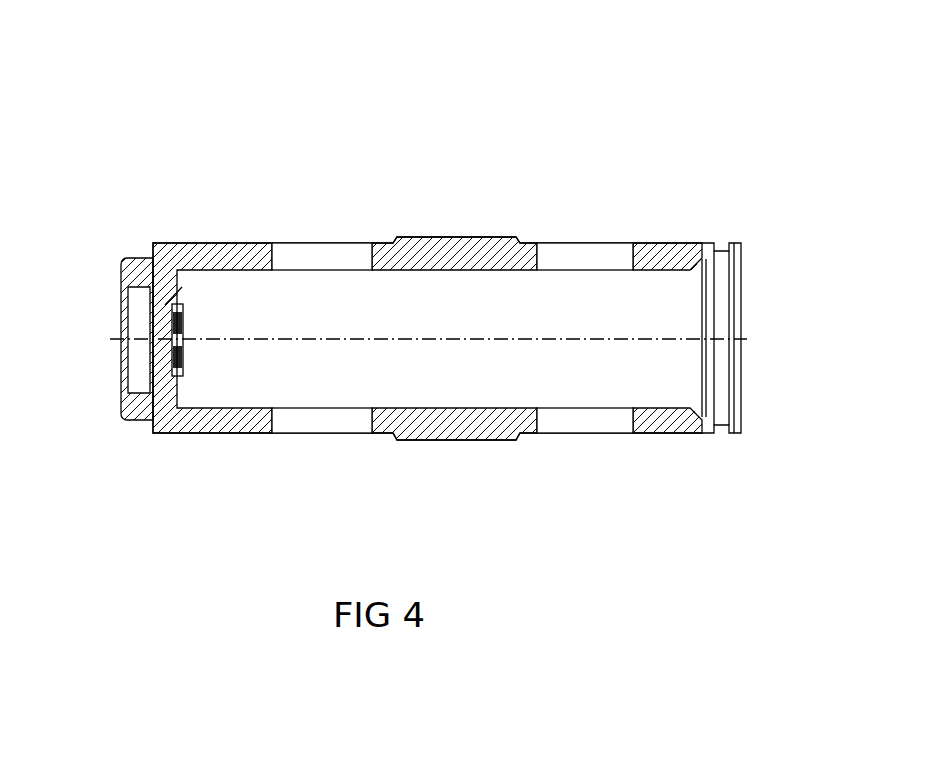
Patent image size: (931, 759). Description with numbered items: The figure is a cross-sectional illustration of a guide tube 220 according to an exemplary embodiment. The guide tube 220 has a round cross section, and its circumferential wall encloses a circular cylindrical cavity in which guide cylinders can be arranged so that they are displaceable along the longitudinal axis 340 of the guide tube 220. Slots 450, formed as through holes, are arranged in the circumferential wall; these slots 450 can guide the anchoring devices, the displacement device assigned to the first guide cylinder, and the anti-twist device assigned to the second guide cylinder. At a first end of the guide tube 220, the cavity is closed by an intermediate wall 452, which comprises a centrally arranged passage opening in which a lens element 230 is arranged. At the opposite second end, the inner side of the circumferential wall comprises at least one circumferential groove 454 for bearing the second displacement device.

The guide tube 220 is at (172, 160).
The lens element 230 is at (157, 360).
The longitudinal axis 340 is at (445, 342).
The slots 450 is at (313, 242).
The intermediate wall 452 is at (181, 290).
The circumferential groove 454 is at (723, 422).